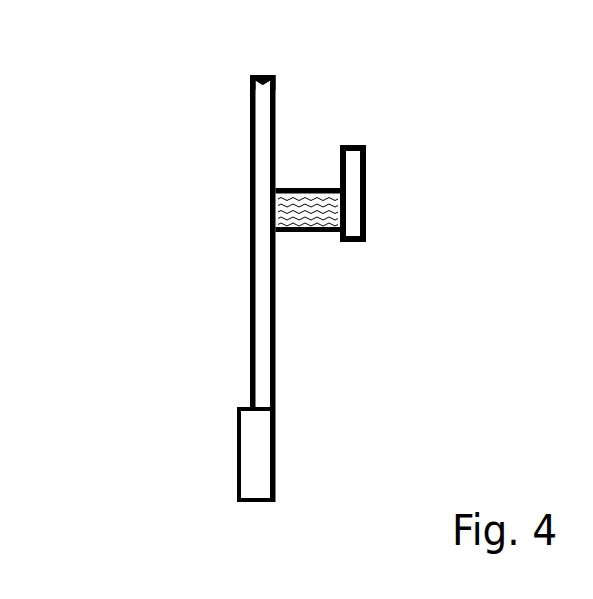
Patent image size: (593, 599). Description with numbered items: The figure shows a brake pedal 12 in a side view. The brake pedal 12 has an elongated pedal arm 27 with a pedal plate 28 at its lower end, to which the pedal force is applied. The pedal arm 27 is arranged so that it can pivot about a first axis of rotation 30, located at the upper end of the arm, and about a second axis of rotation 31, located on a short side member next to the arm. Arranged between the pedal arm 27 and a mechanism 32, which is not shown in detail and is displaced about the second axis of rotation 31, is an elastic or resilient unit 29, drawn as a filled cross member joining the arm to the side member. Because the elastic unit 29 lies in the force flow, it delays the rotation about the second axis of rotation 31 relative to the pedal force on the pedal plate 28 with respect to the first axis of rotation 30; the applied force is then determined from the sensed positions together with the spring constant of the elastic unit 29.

The brake pedal 12 is at (102, 292).
The pedal arm 27 is at (276, 350).
The pedal plate 28 is at (276, 462).
The elastic unit 29 is at (286, 187).
The first axis of rotation 30 is at (263, 76).
The second axis of rotation 31 is at (353, 146).
The mechanism 32 is at (371, 204).